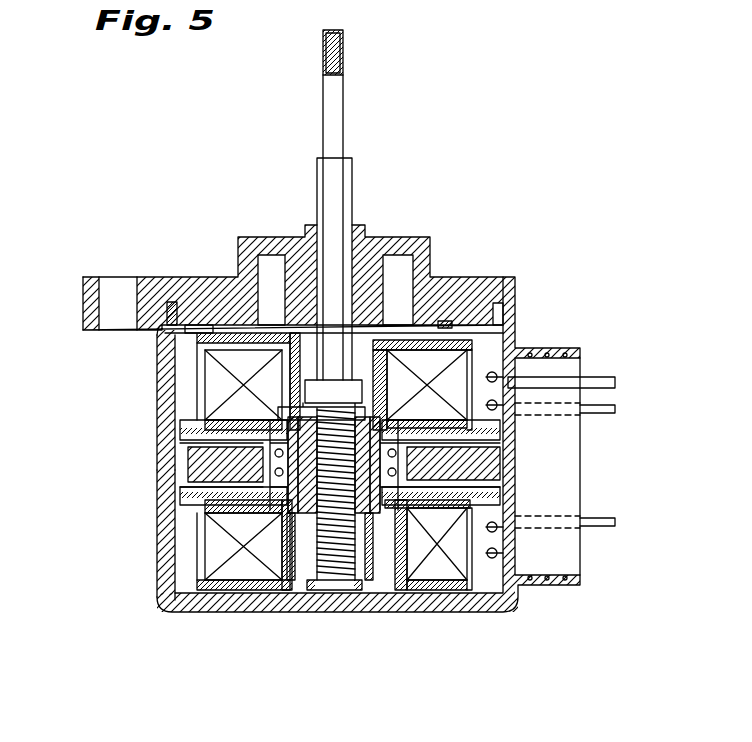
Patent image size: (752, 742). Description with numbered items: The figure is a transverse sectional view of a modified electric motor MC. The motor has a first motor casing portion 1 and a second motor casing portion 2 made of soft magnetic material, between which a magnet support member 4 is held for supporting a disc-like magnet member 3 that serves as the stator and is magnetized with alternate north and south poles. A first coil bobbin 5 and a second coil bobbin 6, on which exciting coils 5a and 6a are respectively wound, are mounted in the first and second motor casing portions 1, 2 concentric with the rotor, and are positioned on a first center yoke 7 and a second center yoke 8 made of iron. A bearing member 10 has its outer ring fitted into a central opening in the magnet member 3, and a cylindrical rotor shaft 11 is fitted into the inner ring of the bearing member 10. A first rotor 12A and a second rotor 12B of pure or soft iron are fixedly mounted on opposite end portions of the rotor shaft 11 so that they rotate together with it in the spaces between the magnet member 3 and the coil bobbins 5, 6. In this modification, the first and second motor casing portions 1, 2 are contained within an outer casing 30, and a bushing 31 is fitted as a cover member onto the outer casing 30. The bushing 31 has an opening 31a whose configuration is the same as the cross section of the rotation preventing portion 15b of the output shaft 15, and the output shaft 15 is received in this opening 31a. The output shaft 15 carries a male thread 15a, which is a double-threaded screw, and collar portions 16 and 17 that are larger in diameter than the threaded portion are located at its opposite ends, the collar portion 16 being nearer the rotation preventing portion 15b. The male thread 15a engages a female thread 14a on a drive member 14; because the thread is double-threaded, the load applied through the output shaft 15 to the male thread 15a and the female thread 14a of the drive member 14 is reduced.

The electric motor MC is at (472, 158).
The first motor casing portion 1 is at (170, 363).
The second motor casing portion 2 is at (170, 563).
The magnet member 3 is at (195, 475).
The magnet support member 4 is at (185, 455).
The first coil bobbin 5 is at (250, 335).
The exciting coil 5a is at (233, 353).
The second coil bobbin 6 is at (253, 587).
The exciting coil 6a is at (222, 600).
The first center yoke 7 is at (380, 340).
The second center yoke 8 is at (365, 582).
The bearing member 10 is at (170, 442).
The rotor shaft 11 is at (393, 562).
The first rotor 12A is at (183, 413).
The second rotor 12B is at (182, 507).
The drive member 14 is at (282, 530).
The female thread 14a is at (308, 500).
The output shaft 15 is at (340, 105).
The male thread 15a is at (337, 582).
The rotation preventing portion 15b is at (330, 185).
The collar portion 16 is at (373, 402).
The collar portion 17 is at (345, 585).
The outer casing 30 is at (467, 610).
The bushing 31 is at (483, 287).
The opening 31a is at (358, 250).